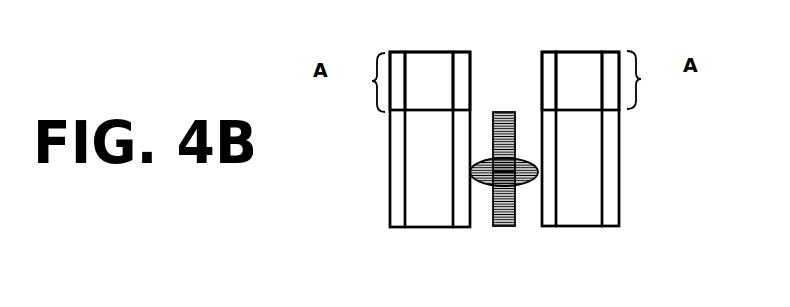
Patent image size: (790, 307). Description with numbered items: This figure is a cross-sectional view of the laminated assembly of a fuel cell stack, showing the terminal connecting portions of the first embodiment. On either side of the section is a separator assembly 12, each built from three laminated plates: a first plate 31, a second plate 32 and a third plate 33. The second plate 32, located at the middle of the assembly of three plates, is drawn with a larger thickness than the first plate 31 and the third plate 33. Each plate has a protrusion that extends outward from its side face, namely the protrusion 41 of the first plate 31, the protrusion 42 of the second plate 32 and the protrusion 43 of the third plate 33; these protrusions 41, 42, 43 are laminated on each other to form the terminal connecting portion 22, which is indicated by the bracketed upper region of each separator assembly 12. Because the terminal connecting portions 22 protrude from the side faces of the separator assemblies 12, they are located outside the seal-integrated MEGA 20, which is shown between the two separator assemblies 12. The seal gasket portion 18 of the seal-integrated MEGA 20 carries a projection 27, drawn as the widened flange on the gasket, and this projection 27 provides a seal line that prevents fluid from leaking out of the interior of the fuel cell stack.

The separator assembly 12 is at (365, 218).
The seal gasket portion 18 is at (498, 112).
The seal-integrated MEGA 20 is at (502, 227).
The terminal connecting portion 22 is at (504, 81).
The projection 27 is at (525, 158).
The first plate 31 is at (460, 192).
The second plate 32 is at (427, 165).
The third plate 33 is at (398, 134).
The protrusion 41 is at (463, 62).
The protrusion 42 is at (430, 65).
The protrusion 43 is at (399, 63).